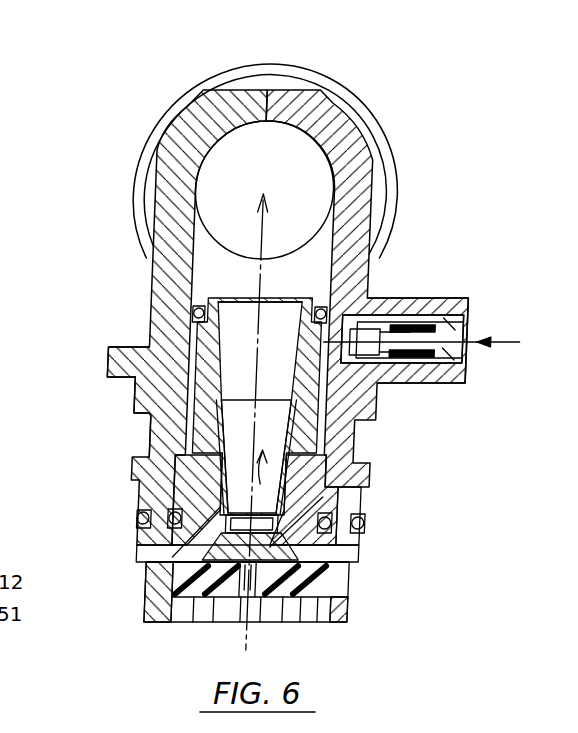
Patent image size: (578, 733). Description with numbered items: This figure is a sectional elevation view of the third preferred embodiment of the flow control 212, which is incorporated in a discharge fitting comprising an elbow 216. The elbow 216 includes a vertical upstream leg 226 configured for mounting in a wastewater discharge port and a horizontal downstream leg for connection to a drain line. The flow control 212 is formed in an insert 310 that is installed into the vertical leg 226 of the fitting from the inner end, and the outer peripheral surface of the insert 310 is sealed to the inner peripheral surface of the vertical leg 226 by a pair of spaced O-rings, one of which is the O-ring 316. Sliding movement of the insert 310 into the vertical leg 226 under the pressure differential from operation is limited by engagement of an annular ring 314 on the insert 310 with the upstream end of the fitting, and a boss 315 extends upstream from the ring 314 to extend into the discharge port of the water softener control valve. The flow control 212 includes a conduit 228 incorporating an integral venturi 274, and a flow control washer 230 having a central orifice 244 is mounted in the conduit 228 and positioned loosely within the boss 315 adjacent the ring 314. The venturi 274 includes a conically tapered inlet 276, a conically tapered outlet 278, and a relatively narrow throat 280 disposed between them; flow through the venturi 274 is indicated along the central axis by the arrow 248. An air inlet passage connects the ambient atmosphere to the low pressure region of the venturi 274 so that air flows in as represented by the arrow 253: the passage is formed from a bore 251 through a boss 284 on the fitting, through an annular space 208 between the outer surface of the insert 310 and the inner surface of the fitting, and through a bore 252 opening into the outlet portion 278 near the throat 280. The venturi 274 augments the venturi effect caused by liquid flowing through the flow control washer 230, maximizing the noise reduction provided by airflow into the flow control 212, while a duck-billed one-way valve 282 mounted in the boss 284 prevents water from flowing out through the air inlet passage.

The flow control 212 is at (390, 110).
The elbow 216 is at (290, 84).
The conduit 228 is at (208, 164).
The flow direction / axis 248 is at (263, 230).
The boss 284 is at (430, 298).
The duck-billed one-way valve 282 is at (395, 366).
The arrow 253 is at (510, 340).
The bore 251 is at (462, 346).
The annular ring 314 is at (188, 312).
The insert 310 is at (200, 356).
The venturi 274 is at (214, 440).
The conically tapered outlet 278 is at (226, 455).
The vertical upstream leg 226 is at (134, 386).
The annular space 208 is at (135, 413).
The throat 280 is at (210, 506).
The bore 252 is at (336, 487).
The O-ring 316 is at (376, 514).
The central orifice 244 is at (252, 592).
The flow control washer 230 is at (330, 576).
The conically tapered inlet 276 is at (172, 575).
The boss 315 is at (347, 602).